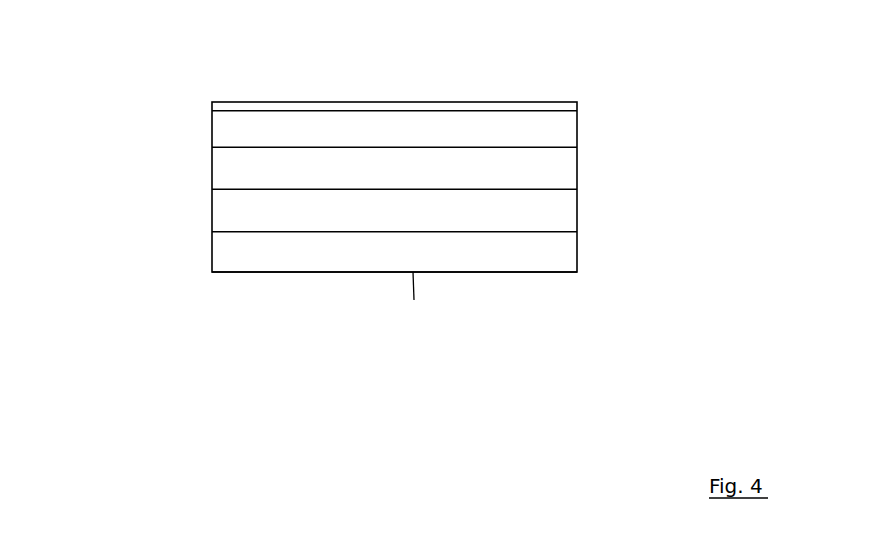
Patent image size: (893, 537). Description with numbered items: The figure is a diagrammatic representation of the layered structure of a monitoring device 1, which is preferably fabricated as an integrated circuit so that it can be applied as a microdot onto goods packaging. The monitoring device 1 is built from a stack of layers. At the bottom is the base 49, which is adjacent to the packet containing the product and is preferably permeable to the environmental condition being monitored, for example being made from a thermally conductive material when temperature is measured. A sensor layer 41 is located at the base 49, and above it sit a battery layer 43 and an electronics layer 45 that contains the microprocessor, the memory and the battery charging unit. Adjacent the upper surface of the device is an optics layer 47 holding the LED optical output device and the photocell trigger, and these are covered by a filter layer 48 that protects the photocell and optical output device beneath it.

The monitoring device 1 is at (498, 70).
The sensor layer 41 is at (566, 249).
The battery layer 43 is at (232, 208).
The electronics layer 45 is at (556, 171).
The optics layer 47 is at (223, 127).
The filter layer 48 is at (390, 102).
The base 49 is at (413, 272).